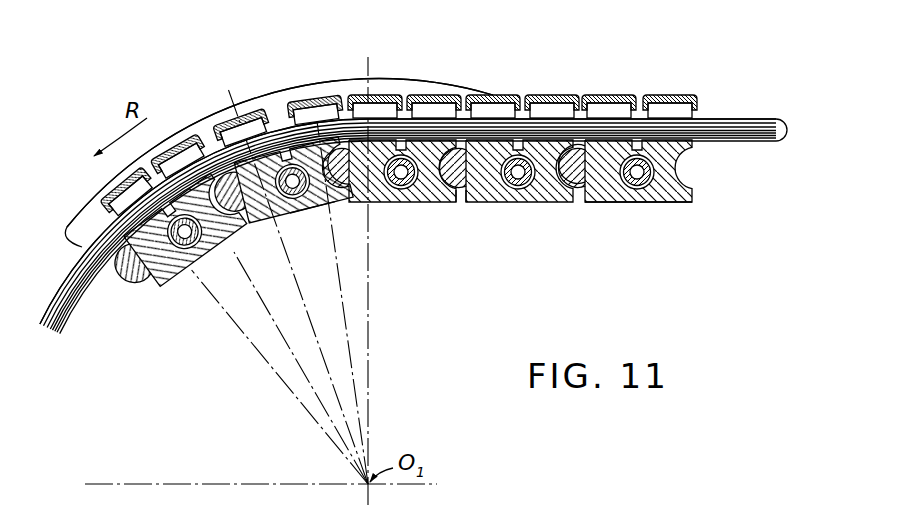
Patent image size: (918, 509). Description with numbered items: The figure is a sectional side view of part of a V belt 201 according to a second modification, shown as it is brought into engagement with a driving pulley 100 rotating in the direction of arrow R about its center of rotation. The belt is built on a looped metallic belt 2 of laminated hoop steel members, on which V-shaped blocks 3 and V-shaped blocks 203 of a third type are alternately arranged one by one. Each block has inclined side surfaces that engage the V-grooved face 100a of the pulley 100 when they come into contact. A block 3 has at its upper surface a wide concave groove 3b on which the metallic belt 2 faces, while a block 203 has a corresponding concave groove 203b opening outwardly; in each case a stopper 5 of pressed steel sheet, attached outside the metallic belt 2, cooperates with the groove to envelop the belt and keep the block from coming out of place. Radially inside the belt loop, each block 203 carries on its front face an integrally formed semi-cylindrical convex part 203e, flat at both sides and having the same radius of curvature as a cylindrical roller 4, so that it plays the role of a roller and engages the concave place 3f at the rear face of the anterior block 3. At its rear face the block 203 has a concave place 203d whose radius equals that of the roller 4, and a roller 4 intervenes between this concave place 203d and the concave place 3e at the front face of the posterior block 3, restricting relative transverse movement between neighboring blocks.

The looped metallic belt 2 is at (734, 116).
The V-shaped block 3 is at (427, 133).
The concave groove 3b is at (314, 108).
The roller receiving concave place 3e is at (312, 210).
The roller receiving concave place 3f is at (460, 206).
The cylindrical roller 4 is at (403, 205).
The stopper 5 is at (382, 93).
The driving pulley 100 is at (191, 116).
The V-grooved face 100a is at (342, 82).
The V belt 201 is at (657, 60).
The V-shaped block 203 is at (622, 60).
The concave groove 203b is at (137, 190).
The concave place 203d is at (637, 205).
The convex part 203e is at (578, 205).